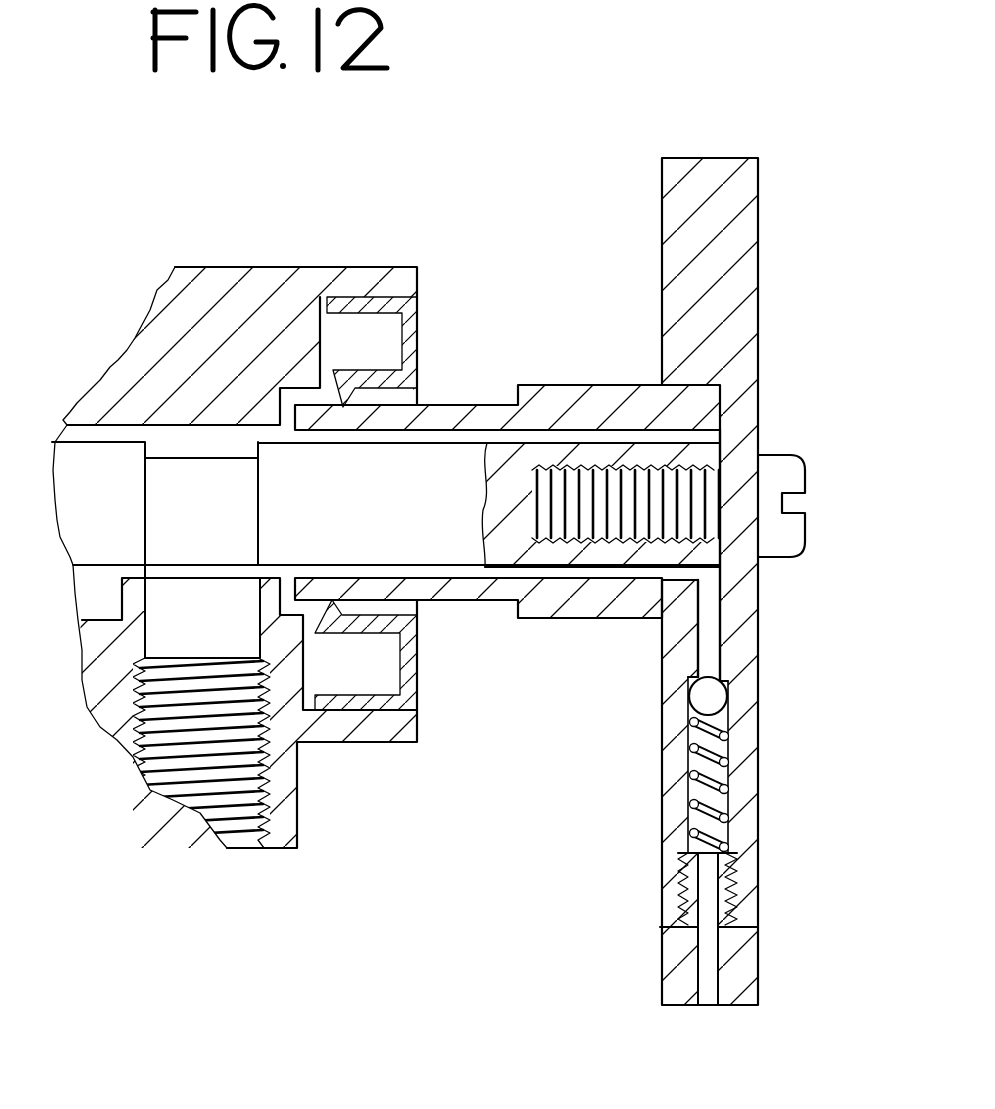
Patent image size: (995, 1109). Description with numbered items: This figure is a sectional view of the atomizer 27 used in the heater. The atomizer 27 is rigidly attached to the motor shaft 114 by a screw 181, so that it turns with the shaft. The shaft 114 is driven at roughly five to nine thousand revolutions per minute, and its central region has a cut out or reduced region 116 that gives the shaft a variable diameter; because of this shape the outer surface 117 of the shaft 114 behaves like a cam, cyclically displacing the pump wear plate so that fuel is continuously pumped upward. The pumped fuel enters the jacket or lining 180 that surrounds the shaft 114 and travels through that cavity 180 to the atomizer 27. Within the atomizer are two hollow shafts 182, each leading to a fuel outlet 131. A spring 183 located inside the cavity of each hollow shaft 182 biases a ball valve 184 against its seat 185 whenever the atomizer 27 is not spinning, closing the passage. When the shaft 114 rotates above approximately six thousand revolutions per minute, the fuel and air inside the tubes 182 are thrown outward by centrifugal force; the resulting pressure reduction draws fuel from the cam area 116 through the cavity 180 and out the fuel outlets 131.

The atomizer 27 is at (743, 322).
The motor shaft 114 is at (90, 470).
The cut out or reduced region 116 is at (160, 462).
The outer surface of shaft 117 is at (170, 578).
The fuel outlets 131 is at (712, 980).
The jacket or lining (cavity) 180 is at (440, 438).
The screw 181 is at (785, 475).
The hollow shafts 182 is at (710, 627).
The spring 183 is at (730, 782).
The ball valve 184 is at (717, 702).
The seat 185 is at (698, 672).